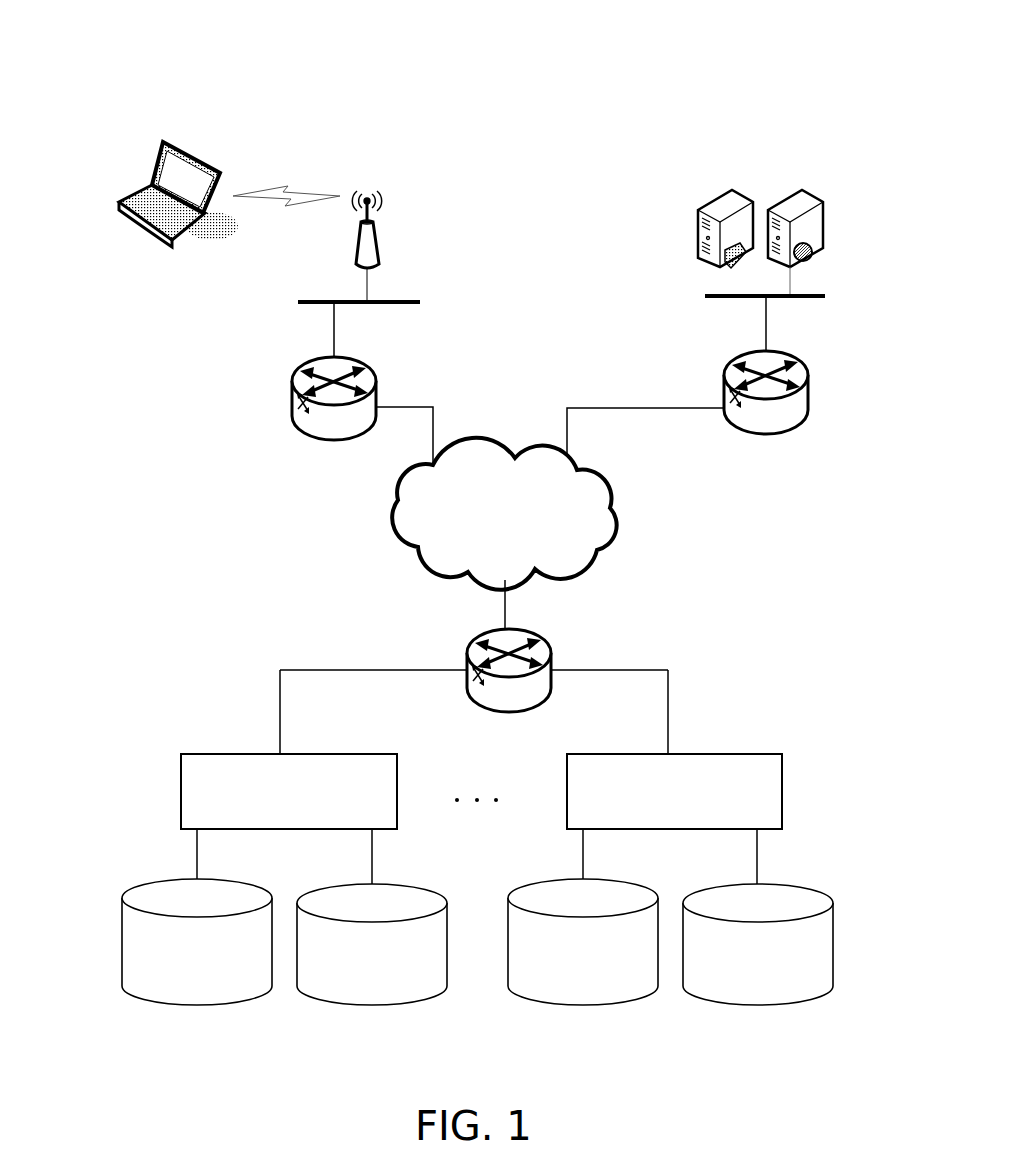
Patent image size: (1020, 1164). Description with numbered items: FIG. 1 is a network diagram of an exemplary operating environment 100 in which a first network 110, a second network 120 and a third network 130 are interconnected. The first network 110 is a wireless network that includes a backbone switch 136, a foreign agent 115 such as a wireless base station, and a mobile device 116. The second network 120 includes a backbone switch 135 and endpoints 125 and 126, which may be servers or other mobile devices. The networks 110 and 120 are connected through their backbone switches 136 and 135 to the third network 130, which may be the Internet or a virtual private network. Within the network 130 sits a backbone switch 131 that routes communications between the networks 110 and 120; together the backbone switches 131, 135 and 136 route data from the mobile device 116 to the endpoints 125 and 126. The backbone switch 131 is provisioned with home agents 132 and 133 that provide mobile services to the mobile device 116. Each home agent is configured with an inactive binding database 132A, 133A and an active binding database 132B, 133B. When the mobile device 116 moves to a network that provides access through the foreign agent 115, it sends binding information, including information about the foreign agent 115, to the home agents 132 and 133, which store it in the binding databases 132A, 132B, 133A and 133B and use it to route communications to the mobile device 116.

The operating environment 100 is at (692, 70).
The first network 110 is at (410, 302).
The foreign agent 115 is at (377, 237).
The mobile device 116 is at (185, 152).
The second network 120 is at (710, 295).
The endpoint 125 is at (800, 198).
The endpoint 126 is at (700, 206).
The third network 130 is at (613, 518).
The backbone switch 131 is at (552, 652).
The home agent 132 is at (181, 792).
The inactive binding database 132A is at (123, 940).
The active binding database 132B is at (385, 885).
The home agent 133 is at (783, 782).
The inactive binding database 133A is at (550, 1003).
The active binding database 133B is at (783, 885).
The backbone switch 135 is at (808, 386).
The backbone switch 136 is at (292, 397).